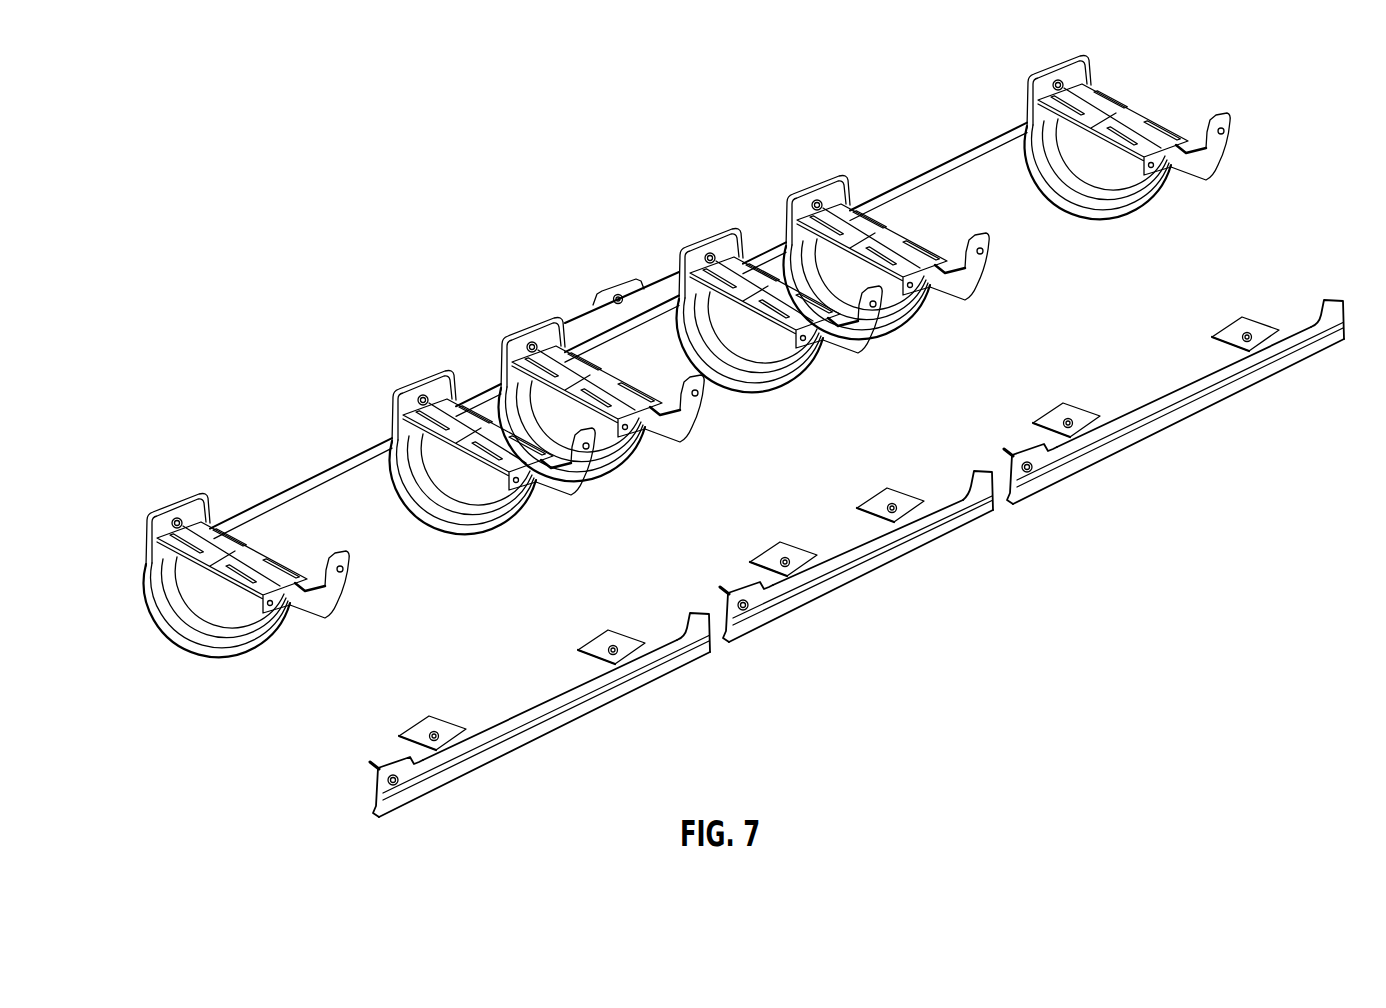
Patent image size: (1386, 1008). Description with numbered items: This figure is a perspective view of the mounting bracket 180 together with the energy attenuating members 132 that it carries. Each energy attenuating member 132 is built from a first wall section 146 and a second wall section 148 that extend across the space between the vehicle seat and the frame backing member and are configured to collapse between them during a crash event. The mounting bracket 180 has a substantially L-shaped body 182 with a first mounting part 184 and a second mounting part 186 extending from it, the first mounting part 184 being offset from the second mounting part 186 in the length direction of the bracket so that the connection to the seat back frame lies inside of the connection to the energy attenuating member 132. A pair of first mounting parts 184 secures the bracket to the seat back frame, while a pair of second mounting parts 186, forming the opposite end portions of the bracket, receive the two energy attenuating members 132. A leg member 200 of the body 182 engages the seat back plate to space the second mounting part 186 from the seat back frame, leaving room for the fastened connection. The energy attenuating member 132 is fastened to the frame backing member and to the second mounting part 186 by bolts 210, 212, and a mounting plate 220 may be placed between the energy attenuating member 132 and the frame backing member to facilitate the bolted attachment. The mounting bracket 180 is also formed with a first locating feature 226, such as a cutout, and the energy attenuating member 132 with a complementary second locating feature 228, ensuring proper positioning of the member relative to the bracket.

The energy attenuating member 132 is at (681, 388).
The first wall section 146 is at (310, 550).
The second wall section 148 is at (170, 641).
The mounting bracket 180 is at (833, 568).
The body 182 is at (633, 688).
The first mounting part 184 is at (605, 628).
The second mounting part 186 is at (372, 790).
The leg member 200 is at (478, 763).
The bolt 210 is at (172, 513).
The bolt 212 is at (400, 785).
The mounting plate 220 is at (612, 288).
The first locating feature 226 is at (677, 643).
The second locating feature 228 is at (570, 472).